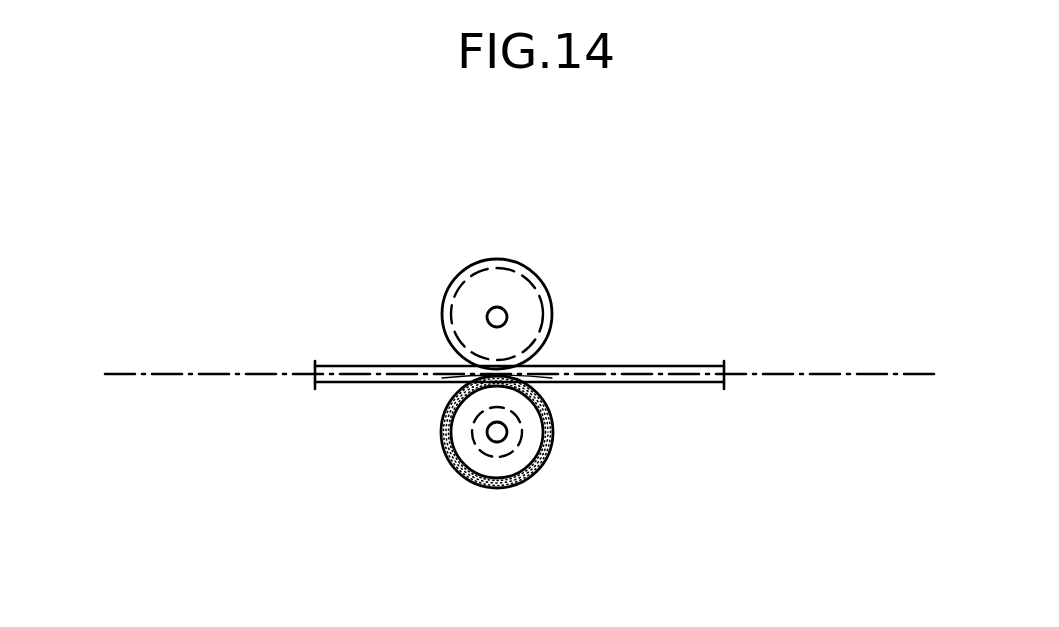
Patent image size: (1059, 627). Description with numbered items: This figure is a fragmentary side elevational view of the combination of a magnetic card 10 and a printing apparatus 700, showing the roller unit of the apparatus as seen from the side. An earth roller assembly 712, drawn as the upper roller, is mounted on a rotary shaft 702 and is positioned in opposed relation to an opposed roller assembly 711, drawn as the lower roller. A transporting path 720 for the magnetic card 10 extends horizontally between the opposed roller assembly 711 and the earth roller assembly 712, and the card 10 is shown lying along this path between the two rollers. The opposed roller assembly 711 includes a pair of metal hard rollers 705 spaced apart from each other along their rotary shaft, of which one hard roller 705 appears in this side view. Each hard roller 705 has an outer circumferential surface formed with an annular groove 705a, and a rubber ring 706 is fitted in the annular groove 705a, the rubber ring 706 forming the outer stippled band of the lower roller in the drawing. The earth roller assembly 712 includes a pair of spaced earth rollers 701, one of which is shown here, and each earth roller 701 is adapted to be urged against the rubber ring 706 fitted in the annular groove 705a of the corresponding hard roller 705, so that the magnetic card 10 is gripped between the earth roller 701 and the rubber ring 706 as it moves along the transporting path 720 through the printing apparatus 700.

The magnetic card 10 is at (688, 366).
The printing apparatus 700 is at (484, 263).
The earth roller 701 is at (531, 268).
The rotary shaft 702 is at (508, 318).
The hard roller 705 is at (455, 418).
The annular groove 705a is at (512, 382).
The rubber ring 706 is at (452, 464).
The opposed roller assembly 711 is at (515, 471).
The earth roller assembly 712 is at (438, 290).
The transporting path 720 is at (783, 373).